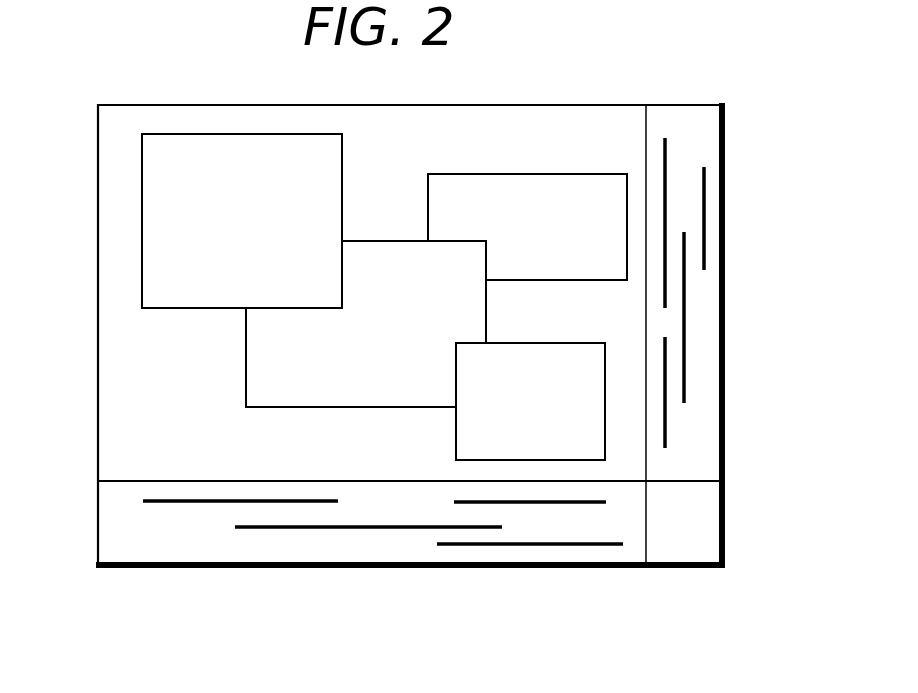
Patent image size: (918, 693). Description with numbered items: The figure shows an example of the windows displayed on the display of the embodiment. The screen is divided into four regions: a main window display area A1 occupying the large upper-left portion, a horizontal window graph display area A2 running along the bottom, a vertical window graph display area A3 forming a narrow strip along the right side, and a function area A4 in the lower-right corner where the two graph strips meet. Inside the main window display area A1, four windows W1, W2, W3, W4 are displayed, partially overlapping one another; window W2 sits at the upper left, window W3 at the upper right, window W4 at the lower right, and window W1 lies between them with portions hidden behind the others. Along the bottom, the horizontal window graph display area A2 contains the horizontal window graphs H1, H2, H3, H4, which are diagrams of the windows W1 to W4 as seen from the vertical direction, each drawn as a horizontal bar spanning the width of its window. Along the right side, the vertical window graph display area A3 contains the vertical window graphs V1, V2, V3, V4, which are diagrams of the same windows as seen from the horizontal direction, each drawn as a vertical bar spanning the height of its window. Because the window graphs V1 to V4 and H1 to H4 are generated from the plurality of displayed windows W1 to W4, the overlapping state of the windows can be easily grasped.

The main window display area A1 is at (219, 113).
The horizontal window graph display area A2 is at (108, 507).
The vertical window graph display area A3 is at (680, 113).
The function area A4 is at (710, 527).
The window W1 is at (366, 324).
The window W2 is at (242, 221).
The window W3 is at (527, 227).
The window W4 is at (530, 401).
The horizontal window graph H1 is at (312, 530).
The horizontal window graph H2 is at (166, 505).
The horizontal window graph H3 is at (462, 547).
The horizontal window graph H4 is at (540, 505).
The vertical window graph V1 is at (686, 347).
The vertical window graph V2 is at (668, 150).
The vertical window graph V3 is at (705, 208).
The vertical window graph V4 is at (668, 438).